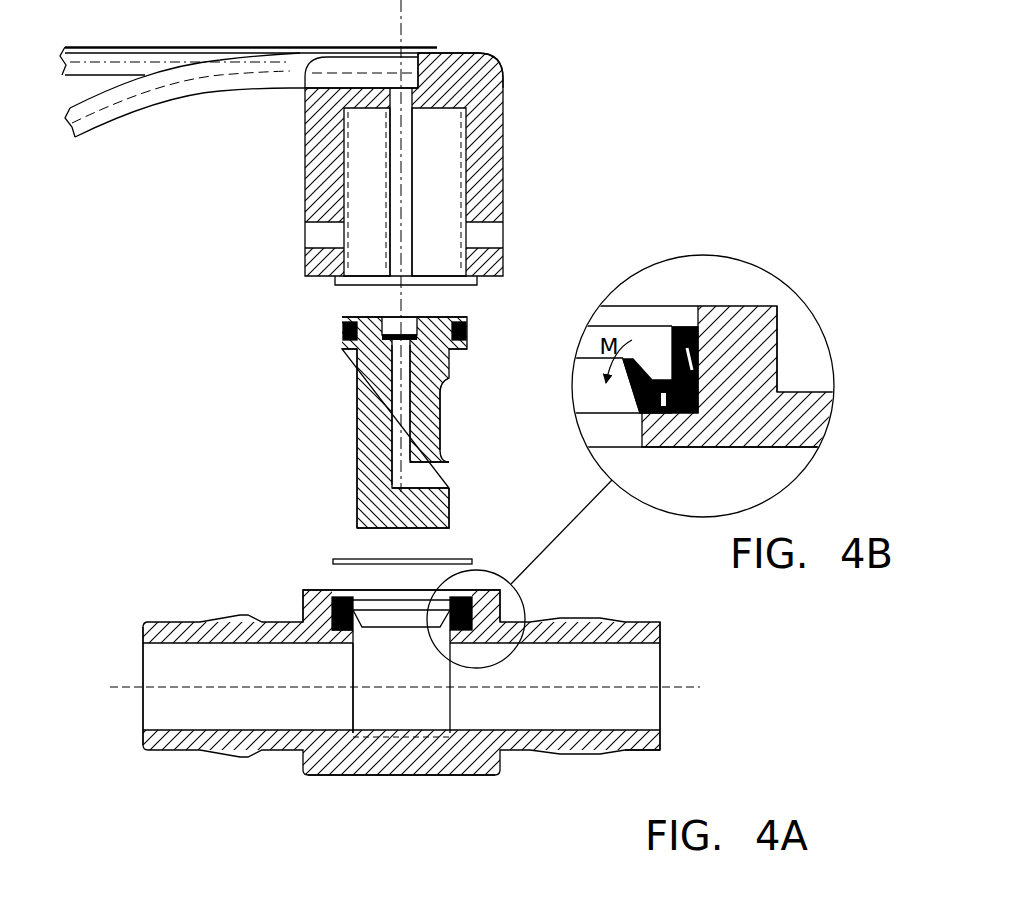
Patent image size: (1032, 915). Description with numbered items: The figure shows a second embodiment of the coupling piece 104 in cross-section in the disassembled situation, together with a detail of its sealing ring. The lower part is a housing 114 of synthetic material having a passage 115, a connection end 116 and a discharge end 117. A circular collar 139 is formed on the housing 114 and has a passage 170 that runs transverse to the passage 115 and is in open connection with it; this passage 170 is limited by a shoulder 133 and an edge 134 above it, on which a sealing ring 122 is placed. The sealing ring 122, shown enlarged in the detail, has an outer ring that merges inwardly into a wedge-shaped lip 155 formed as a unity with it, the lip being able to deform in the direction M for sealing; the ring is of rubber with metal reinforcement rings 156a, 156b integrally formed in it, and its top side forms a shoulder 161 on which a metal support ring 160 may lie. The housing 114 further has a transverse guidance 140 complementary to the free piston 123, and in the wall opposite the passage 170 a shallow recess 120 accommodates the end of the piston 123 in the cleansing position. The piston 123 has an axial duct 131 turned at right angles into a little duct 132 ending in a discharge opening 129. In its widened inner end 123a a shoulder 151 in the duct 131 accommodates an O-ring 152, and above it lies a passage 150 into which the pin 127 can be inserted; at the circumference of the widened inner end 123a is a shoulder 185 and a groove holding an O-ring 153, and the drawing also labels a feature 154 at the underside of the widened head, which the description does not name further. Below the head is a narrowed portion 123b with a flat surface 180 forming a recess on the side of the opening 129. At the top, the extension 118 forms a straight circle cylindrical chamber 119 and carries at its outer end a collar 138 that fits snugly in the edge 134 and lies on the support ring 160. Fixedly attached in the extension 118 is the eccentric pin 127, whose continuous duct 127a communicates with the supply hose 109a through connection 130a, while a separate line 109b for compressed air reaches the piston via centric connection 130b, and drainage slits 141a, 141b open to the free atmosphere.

In FIG. 4A, the coupling piece 104 is at (178, 784).
In FIG. 4A, the supply hose 109a is at (162, 50).
In FIG. 4A, the separate line for compressed air 109b is at (160, 100).
In FIG. 4A, the housing 114 is at (640, 745).
In FIG. 4A, the passage 115 is at (564, 723).
In FIG. 4A, the connection end 116 is at (640, 630).
In FIG. 4A, the discharge end 117 is at (160, 628).
In FIG. 4A, the extension 118 is at (501, 178).
In FIG. 4A, the chamber 119 is at (449, 208).
In FIG. 4A, the shallow recess 120 is at (455, 775).
In FIG. 4B, the sealing ring 122 is at (700, 406).
In FIG. 4A, the free piston 123 is at (358, 475).
In FIG. 4A, the widened inner end 123a is at (360, 350).
In FIG. 4A, the narrowed portion 123b is at (370, 446).
In FIG. 4A, the pin 127 is at (400, 143).
In FIG. 4A, the continuous duct 127a is at (464, 150).
In FIG. 4A, the discharge opening 129 is at (440, 492).
In FIG. 4A, the connection 130a is at (455, 55).
In FIG. 4A, the centric connection 130b is at (348, 68).
In FIG. 4A, the duct 131 is at (412, 400).
In FIG. 4A, the little duct 132 is at (420, 470).
In FIG. 4A, the shoulder 133 is at (350, 635).
In FIG. 4B, the shoulder 133 is at (688, 450).
In FIG. 4B, the edge 134 is at (738, 362).
In FIG. 4A, the collar 138 is at (318, 280).
In FIG. 4A, the circular collar 139 is at (500, 612).
In FIG. 4B, the circular collar 139 is at (757, 318).
In FIG. 4A, the transverse guidance 140 is at (390, 697).
In FIG. 4A, the drainage slit 141a is at (504, 236).
In FIG. 4A, the drainage slit 141b is at (306, 238).
In FIG. 4A, the passage 150 is at (415, 320).
In FIG. 4A, the shoulder 151 is at (450, 380).
In FIG. 4A, the O-ring 152 is at (345, 334).
In FIG. 4A, the O-ring 153 is at (468, 332).
In FIG. 4A, the plunger head shoulder 154 is at (357, 352).
In FIG. 4B, the wedge-shaped lip 155 is at (633, 383).
In FIG. 4B, the metal reinforcement ring 156a is at (692, 327).
In FIG. 4B, the metal reinforcement ring 156b is at (664, 413).
In FIG. 4A, the metal support ring 160 is at (345, 561).
In FIG. 4A, the shoulder 161 is at (338, 600).
In FIG. 4B, the shoulder 161 is at (685, 327).
In FIG. 4A, the passage 170 is at (343, 620).
In FIG. 4A, the flat surface 180 is at (442, 430).
In FIG. 4A, the shoulder 185 is at (468, 350).